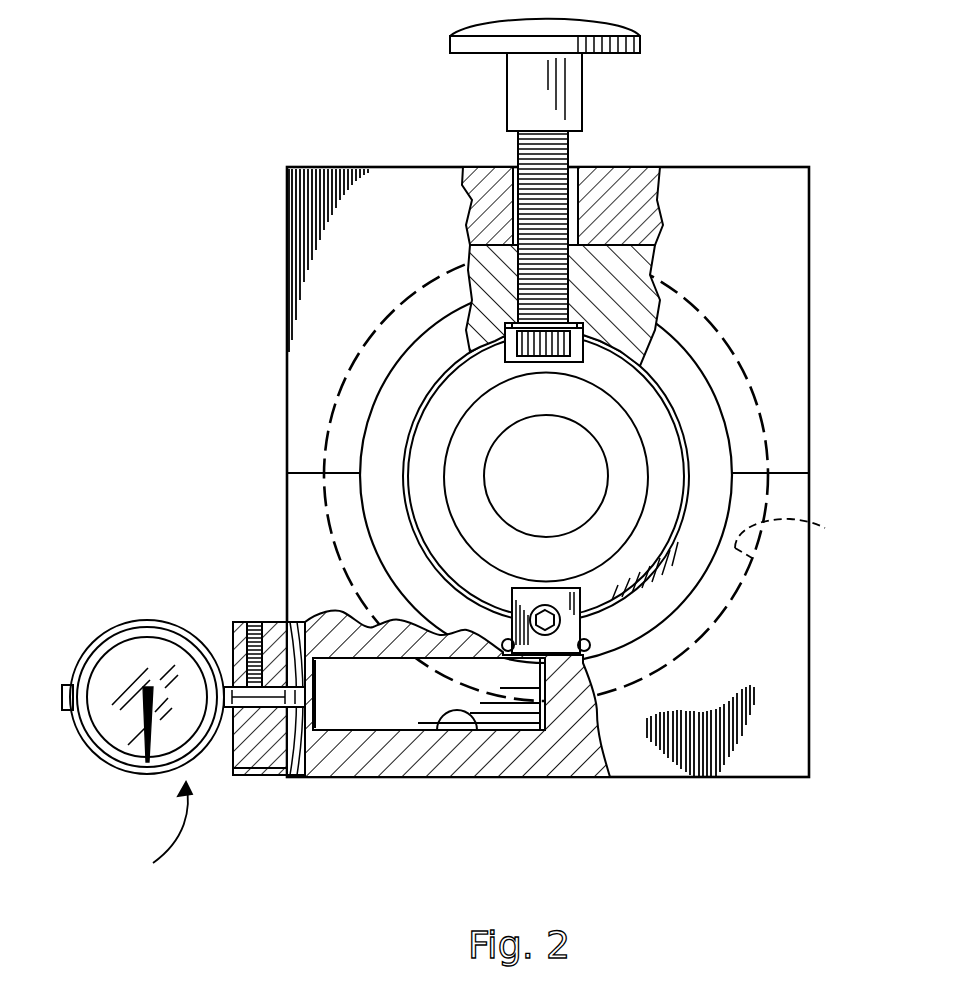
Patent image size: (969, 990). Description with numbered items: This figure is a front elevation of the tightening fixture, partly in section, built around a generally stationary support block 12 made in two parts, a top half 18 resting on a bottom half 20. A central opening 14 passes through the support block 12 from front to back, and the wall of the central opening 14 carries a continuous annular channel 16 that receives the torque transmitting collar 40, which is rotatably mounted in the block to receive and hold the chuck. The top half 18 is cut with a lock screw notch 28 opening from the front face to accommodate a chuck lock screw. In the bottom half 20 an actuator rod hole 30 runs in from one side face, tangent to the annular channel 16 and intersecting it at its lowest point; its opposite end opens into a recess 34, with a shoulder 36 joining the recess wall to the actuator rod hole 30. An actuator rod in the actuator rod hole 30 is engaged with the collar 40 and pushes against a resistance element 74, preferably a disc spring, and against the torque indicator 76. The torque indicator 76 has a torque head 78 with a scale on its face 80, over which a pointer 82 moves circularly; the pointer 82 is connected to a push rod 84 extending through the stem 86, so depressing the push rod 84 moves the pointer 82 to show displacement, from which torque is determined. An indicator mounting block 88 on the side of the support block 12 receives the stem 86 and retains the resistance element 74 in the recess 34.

The support block 12 is at (811, 299).
The central opening 14 is at (733, 420).
The annular channel 16 is at (828, 530).
The top half 18 is at (320, 270).
The bottom half 20 is at (780, 712).
The lock screw notch 28 is at (557, 197).
The actuator rod hole 30 is at (485, 727).
The recess 34 is at (297, 760).
The shoulder 36 is at (312, 755).
The torque transmitting collar 40 is at (383, 430).
The resistance element 74 is at (233, 660).
The torque indicator 76 is at (152, 828).
The torque head 78 is at (92, 747).
The face 80 is at (135, 665).
The pointer 82 is at (145, 762).
The push rod 84 is at (262, 777).
The stem 86 is at (226, 690).
The indicator mounting block 88 is at (277, 623).